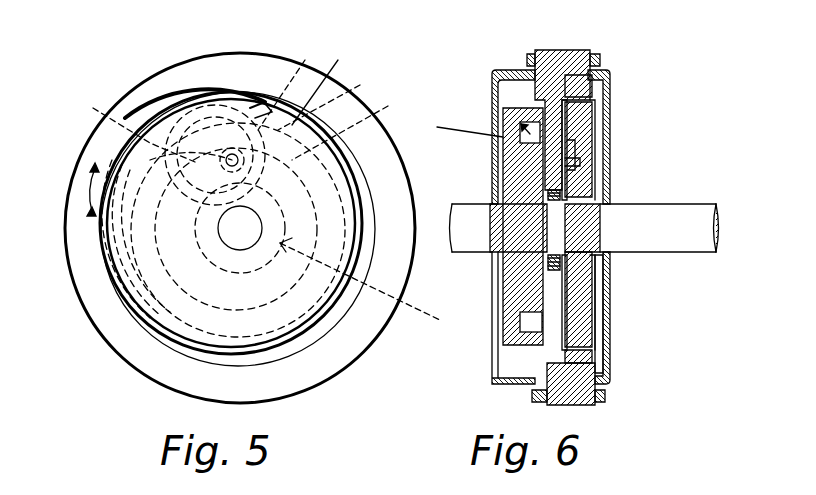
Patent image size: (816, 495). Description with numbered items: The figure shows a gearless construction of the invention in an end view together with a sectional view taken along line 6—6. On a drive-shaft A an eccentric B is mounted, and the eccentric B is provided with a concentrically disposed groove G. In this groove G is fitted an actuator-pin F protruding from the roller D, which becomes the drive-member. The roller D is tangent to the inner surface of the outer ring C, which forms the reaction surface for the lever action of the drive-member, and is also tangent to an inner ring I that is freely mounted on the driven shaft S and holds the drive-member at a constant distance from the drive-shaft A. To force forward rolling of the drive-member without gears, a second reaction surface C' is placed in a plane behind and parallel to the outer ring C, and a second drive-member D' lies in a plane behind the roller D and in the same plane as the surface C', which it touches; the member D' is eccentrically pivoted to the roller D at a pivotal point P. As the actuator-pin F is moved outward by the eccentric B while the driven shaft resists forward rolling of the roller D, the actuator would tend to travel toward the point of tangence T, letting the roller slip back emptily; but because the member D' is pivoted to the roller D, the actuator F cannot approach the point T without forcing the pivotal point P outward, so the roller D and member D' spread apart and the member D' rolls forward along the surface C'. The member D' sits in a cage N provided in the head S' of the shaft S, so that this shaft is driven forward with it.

In FIG. 5, the section line 6— 6 is at (210, 27).
In FIG. 5, the drive-shaft A is at (222, 246).
In FIG. 6, the drive-shaft A is at (474, 240).
In FIG. 5, the eccentric B is at (328, 182).
In FIG. 6, the eccentric B is at (470, 132).
In FIG. 5, the outer ring C is at (248, 228).
In FIG. 6, the outer ring C is at (548, 208).
In FIG. 5, the second reaction surface C' is at (268, 223).
In FIG. 6, the second reaction surface C' is at (607, 227).
In FIG. 5, the roller D is at (195, 81).
In FIG. 6, the roller D is at (497, 70).
In FIG. 5, the second drive-member D' is at (275, 70).
In FIG. 6, the second drive-member D' is at (626, 214).
In FIG. 5, the actuator-pin F is at (290, 82).
In FIG. 6, the actuator-pin F is at (495, 105).
In FIG. 5, the groove G is at (349, 123).
In FIG. 6, the groove G is at (533, 322).
In FIG. 6, the inner ring I is at (550, 278).
In FIG. 5, the cage N is at (328, 97).
In FIG. 6, the cage N is at (567, 147).
In FIG. 5, the pivotal point P is at (259, 206).
In FIG. 6, the pivotal point P is at (567, 163).
In FIG. 6, the driven shaft S is at (635, 197).
In FIG. 5, the head S' is at (323, 81).
In FIG. 6, the head S' is at (626, 314).
In FIG. 5, the point of tangence T is at (200, 105).